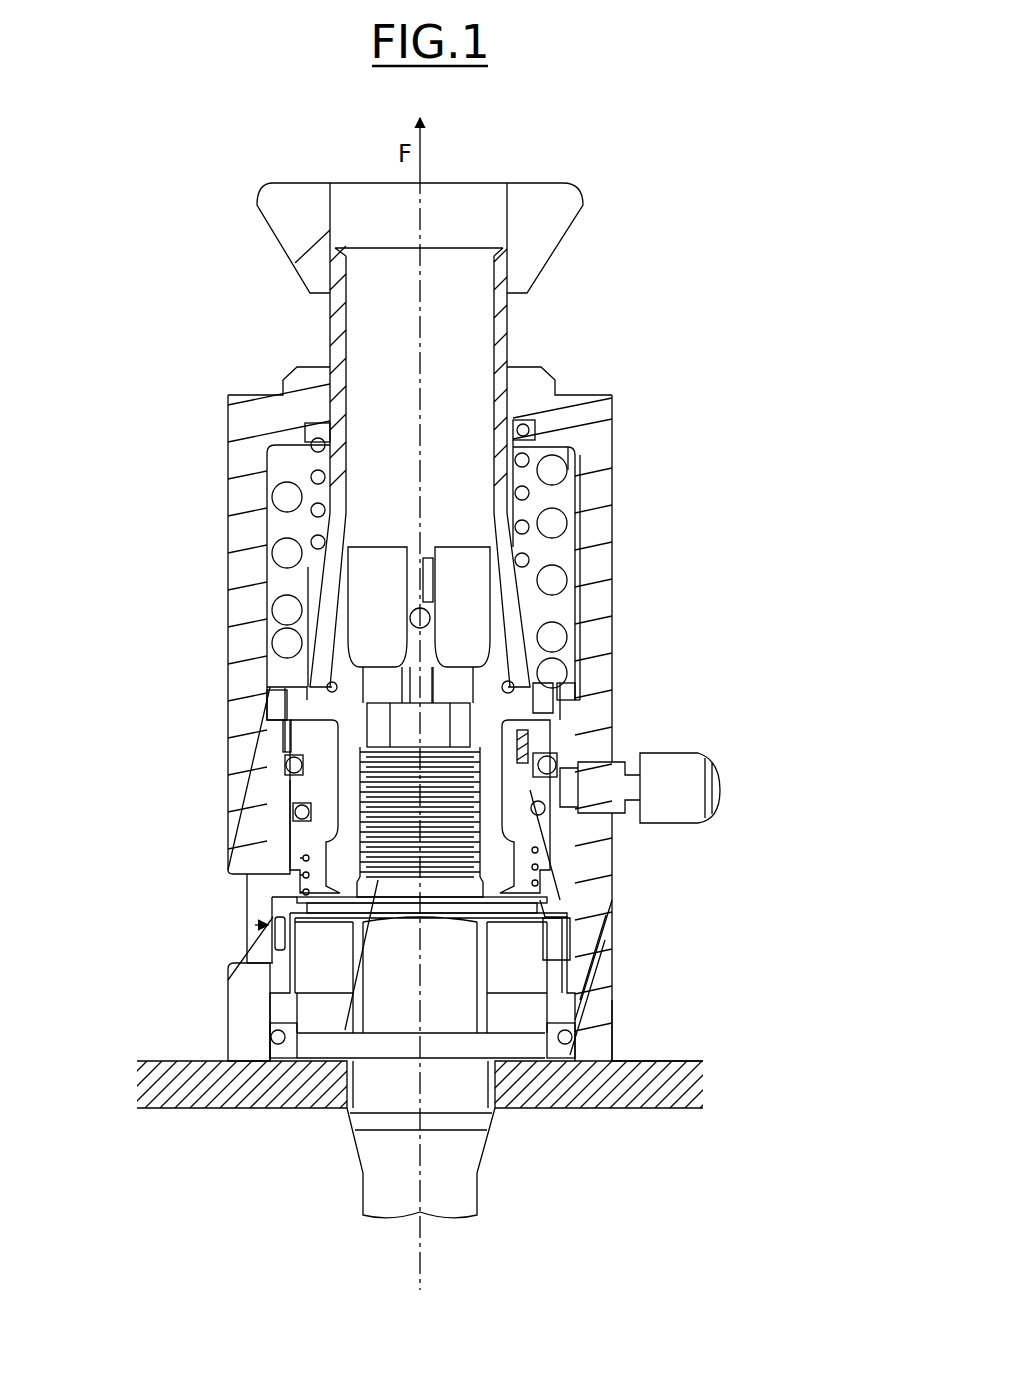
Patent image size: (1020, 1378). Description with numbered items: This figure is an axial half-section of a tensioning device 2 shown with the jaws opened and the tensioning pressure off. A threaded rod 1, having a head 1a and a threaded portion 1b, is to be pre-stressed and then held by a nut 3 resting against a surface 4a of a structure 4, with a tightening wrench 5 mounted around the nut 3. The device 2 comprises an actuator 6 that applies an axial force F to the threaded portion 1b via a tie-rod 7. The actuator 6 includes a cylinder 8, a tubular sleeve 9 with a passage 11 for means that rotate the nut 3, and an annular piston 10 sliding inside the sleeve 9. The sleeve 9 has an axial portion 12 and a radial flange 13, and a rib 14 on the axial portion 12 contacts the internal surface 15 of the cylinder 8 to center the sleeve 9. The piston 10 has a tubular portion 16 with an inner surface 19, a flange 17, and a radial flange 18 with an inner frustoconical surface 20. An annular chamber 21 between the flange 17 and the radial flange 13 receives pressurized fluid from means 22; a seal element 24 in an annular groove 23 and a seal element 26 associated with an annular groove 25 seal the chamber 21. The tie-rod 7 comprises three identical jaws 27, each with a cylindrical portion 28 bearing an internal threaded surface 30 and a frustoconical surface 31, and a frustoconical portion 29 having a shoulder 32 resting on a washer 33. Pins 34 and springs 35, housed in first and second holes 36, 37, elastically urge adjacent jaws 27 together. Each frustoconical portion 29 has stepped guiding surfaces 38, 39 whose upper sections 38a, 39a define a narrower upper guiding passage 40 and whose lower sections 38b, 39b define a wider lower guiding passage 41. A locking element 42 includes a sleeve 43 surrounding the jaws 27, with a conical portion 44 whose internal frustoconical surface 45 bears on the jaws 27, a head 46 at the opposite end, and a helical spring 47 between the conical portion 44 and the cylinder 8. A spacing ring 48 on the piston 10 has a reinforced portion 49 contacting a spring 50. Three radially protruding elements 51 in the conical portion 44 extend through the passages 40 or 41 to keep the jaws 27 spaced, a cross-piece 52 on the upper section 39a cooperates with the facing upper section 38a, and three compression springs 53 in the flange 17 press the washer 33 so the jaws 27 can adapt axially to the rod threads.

The threaded rod 1 is at (470, 1176).
The head 1a is at (275, 777).
The threaded portion 1b is at (350, 978).
The tensioning device 2 is at (645, 178).
The nut 3 is at (322, 1002).
The structure 4 is at (705, 1085).
The surface 4a is at (700, 1057).
The tightening wrench 5 is at (282, 955).
The actuator 6 is at (688, 392).
The tie-rod 7 is at (437, 414).
The cylinder 8 is at (607, 467).
The tubular sleeve 9 is at (590, 957).
The piston 10 is at (300, 870).
The passage 11 is at (272, 935).
The axial portion 12 is at (612, 1030).
The radial flange 13 is at (540, 833).
The rib 14 is at (573, 670).
The internal surface 15 is at (560, 460).
The tubular portion 16 is at (260, 917).
The flange 17 is at (290, 763).
The radial flange 18 is at (303, 937).
The inner surface 19 is at (290, 882).
The inner frustoconical surface 20 is at (287, 923).
The annular chamber 21 is at (560, 760).
The means for supplying fluid 22 is at (720, 790).
The annular groove 23 is at (327, 820).
The seal element 24 is at (320, 800).
The annular groove 25 is at (557, 840).
The seal element 26 is at (543, 813).
The jaw 27 is at (392, 550).
The cylindrical portion 28 is at (548, 935).
The frustoconical portion 29 is at (578, 640).
The internal threaded surface 30 is at (542, 917).
The frustoconical surface 31 is at (600, 975).
The shoulder 32 is at (282, 712).
The washer 33 is at (293, 745).
The pin 34 is at (567, 690).
The spring 35 is at (575, 655).
The first hole 36 is at (543, 715).
The second hole 37 is at (290, 655).
The guiding surface 38 is at (403, 640).
The upper section 38a is at (424, 562).
The lower section 38b is at (403, 655).
The guiding surface 39 is at (437, 637).
The upper section 39a is at (428, 612).
The lower section 39b is at (440, 655).
The upper guiding passage 40 is at (573, 617).
The lower guiding passage 41 is at (277, 687).
The locking element 42 is at (336, 178).
The sleeve 43 is at (338, 327).
The conical portion 44 is at (317, 612).
The internal frustoconical surface 45 is at (270, 582).
The head 46 is at (278, 230).
The helical spring 47 is at (525, 455).
The spacing ring 48 is at (270, 700).
The reinforced portion 49 is at (265, 655).
The spring 50 is at (283, 498).
The radially protruding element 51 is at (567, 593).
The cross-piece 52 is at (555, 577).
The compression spring 53 is at (527, 745).